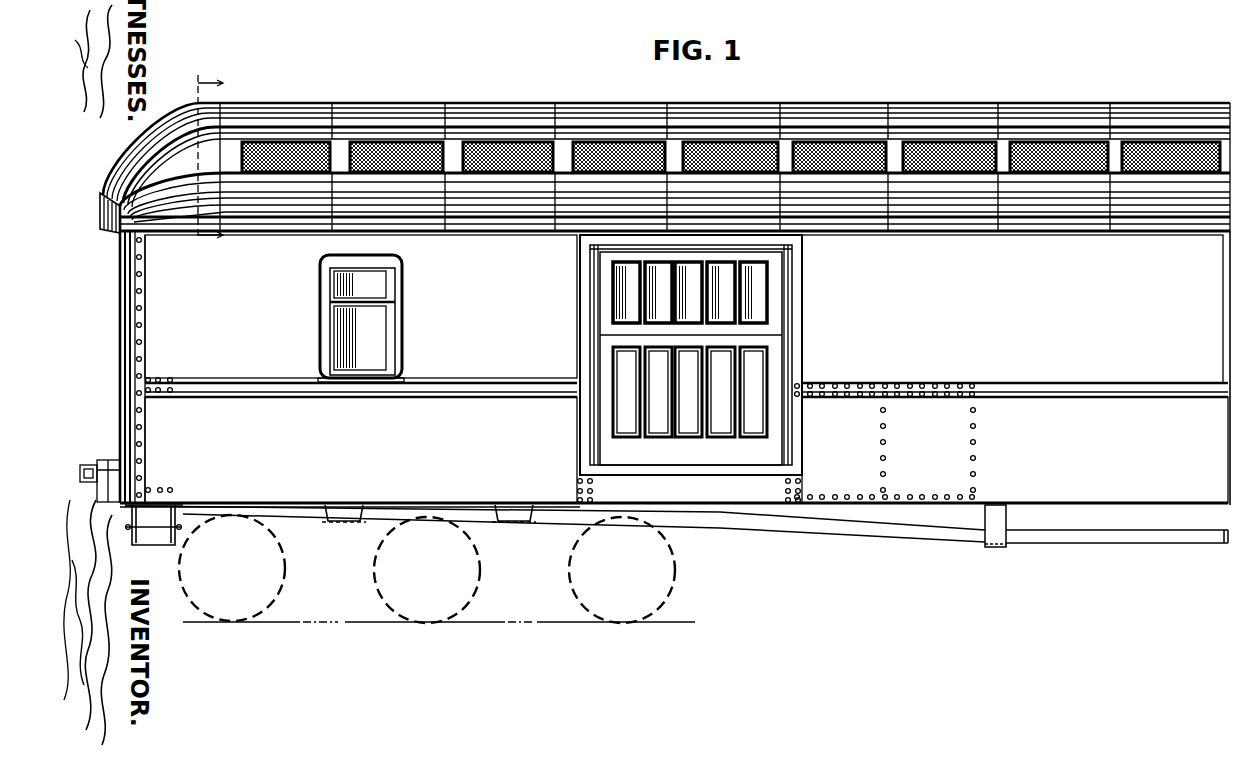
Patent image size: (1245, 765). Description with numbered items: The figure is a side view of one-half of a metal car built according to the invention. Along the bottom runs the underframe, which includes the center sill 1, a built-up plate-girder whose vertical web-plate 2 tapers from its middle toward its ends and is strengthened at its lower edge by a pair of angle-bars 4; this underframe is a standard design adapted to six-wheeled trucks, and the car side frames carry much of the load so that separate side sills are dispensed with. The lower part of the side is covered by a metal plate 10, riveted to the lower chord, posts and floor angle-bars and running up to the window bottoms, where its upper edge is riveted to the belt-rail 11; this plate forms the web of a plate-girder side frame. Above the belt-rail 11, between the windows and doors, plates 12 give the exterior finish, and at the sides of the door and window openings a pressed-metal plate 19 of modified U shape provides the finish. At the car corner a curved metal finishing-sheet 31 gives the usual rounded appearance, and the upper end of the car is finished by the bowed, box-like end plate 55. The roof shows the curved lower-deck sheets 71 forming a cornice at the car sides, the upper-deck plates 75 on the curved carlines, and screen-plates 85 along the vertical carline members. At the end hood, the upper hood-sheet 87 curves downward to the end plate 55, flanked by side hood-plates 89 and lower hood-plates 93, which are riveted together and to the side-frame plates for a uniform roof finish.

The center sill 1 is at (740, 512).
The vertical web-plate 2 is at (970, 526).
The angle-bar 4 is at (1065, 538).
The metal plate 10 is at (686, 445).
The belt-rail 11 is at (209, 158).
The plate 12 is at (687, 368).
The pressed-metal plate 19 is at (690, 368).
The curved metal finishing-sheet 31 is at (125, 299).
The end plate 55 is at (105, 230).
The lower-deck sheet 71 is at (313, 203).
The upper-deck plate 75 is at (398, 108).
The screen-plate 85 is at (492, 142).
The upper hood-sheet 87 is at (170, 117).
The side hood-plate 89 is at (160, 168).
The lower hood-plate 93 is at (182, 205).